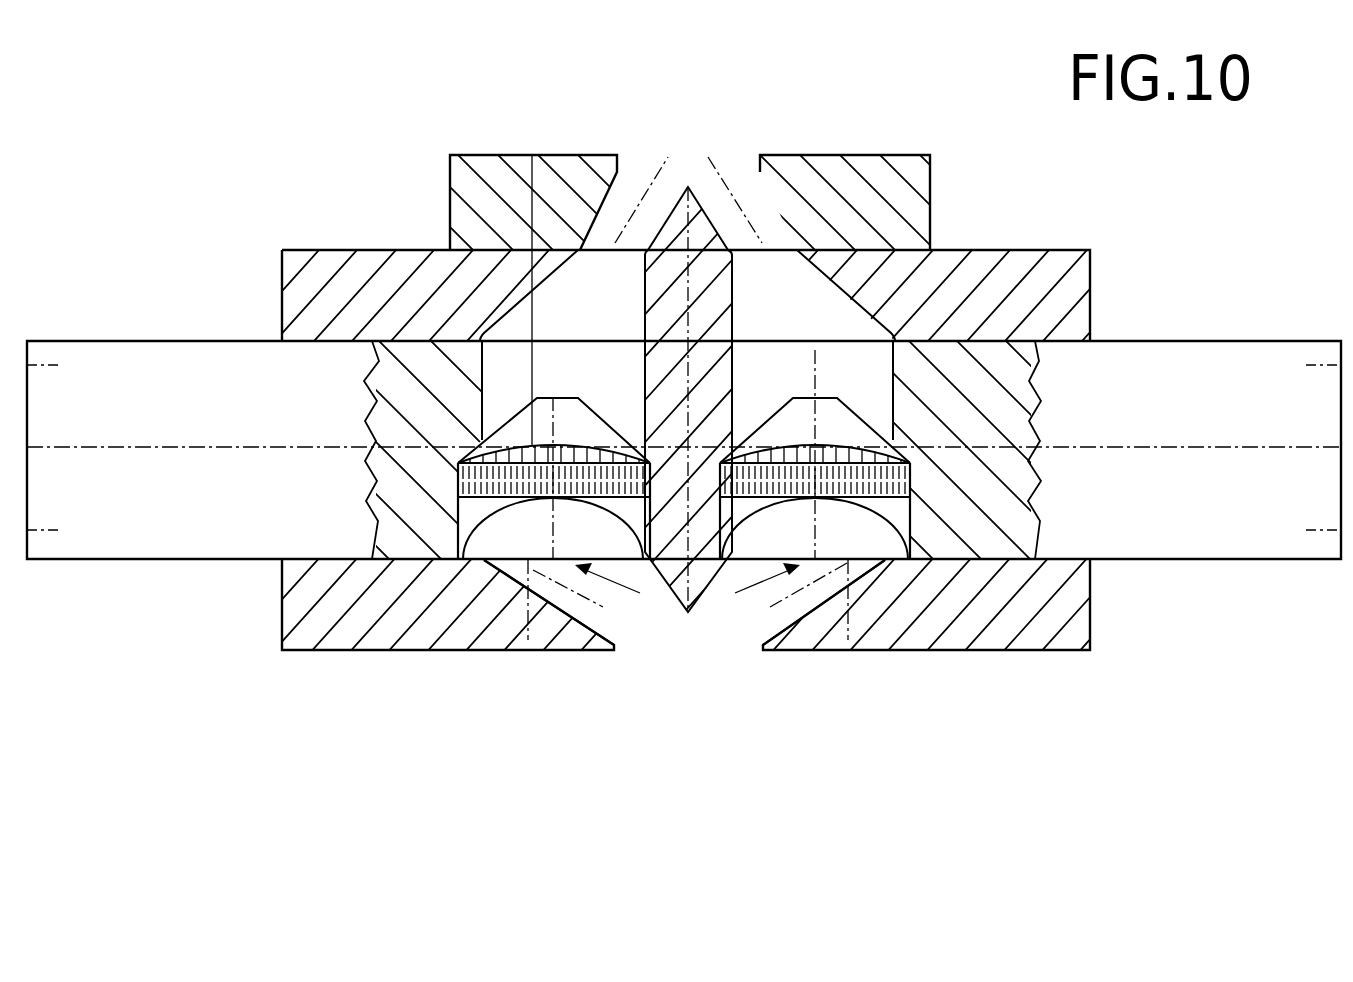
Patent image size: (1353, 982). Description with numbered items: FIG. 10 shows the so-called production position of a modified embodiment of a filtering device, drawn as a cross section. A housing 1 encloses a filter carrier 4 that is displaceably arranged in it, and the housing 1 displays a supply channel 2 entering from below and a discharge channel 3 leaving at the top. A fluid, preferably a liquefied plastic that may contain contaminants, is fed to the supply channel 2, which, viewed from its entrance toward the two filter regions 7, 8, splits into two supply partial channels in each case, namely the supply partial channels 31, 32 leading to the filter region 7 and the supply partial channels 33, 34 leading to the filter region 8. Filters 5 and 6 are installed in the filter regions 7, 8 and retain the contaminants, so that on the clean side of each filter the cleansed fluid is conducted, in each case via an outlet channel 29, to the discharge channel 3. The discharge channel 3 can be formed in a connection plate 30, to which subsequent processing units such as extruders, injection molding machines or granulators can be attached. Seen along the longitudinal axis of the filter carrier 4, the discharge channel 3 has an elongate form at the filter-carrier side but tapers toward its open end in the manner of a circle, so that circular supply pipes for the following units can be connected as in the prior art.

The housing 1 is at (1086, 227).
The supply channel 2 is at (695, 685).
The discharge channel 3 is at (708, 124).
The filter carrier 4 is at (1212, 353).
The filter 5 is at (507, 497).
The filter 6 is at (880, 503).
The filter region 7 is at (554, 430).
The filter region 8 is at (815, 430).
The outlet channel 29 is at (687, 390).
The connection plate 30 is at (913, 203).
The supply partial channel 31 is at (563, 598).
The supply partial channel 32 is at (614, 570).
The supply partial channel 33 is at (758, 568).
The supply partial channel 34 is at (813, 587).